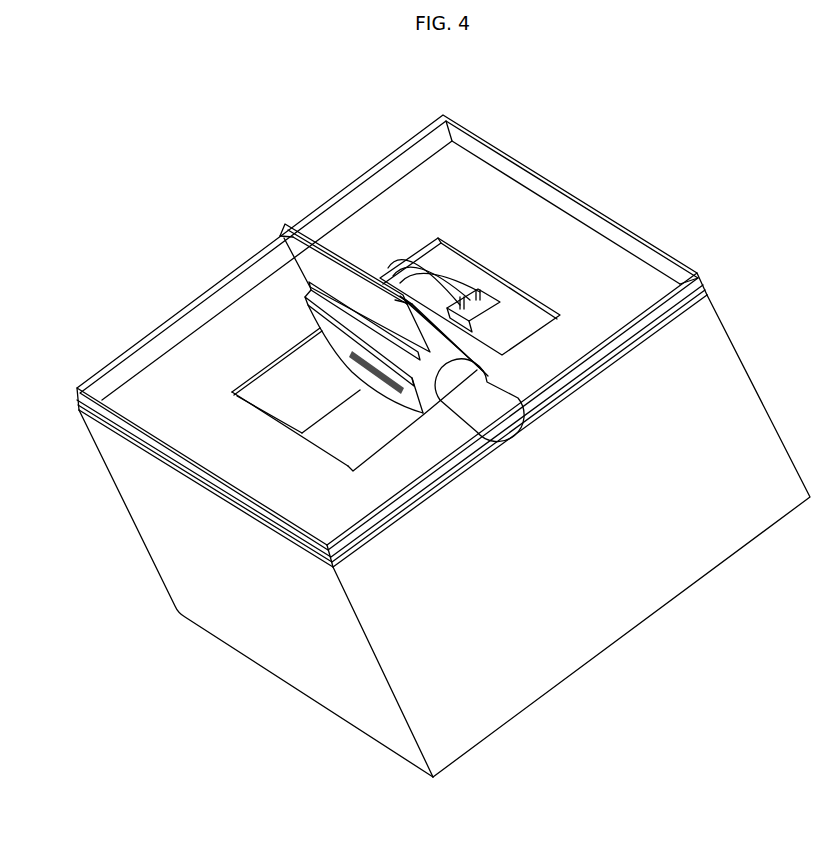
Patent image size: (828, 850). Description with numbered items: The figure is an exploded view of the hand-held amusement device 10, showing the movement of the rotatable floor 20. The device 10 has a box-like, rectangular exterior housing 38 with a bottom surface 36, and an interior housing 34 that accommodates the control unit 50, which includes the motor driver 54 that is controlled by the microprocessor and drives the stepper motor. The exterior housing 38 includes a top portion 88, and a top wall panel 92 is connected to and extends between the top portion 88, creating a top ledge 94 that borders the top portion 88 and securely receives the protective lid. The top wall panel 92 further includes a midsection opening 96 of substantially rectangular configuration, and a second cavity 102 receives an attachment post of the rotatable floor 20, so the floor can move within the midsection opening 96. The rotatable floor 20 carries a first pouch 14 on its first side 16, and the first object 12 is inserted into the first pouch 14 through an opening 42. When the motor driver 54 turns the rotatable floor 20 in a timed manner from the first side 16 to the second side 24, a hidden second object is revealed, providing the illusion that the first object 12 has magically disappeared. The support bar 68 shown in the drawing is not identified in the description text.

The device 10 is at (563, 177).
The first object 12 is at (352, 353).
The first pouch 14 is at (385, 407).
The first side 16 is at (318, 272).
The rotatable floor 20 is at (357, 250).
The second side 24 is at (357, 273).
The interior housing 34 is at (295, 390).
The bottom surface 36 is at (555, 690).
The exterior housing 38 is at (227, 598).
The opening 42 is at (340, 315).
The control unit 50 is at (503, 297).
The motor driver 54 is at (510, 318).
The support bar 68 is at (417, 323).
The top portion 88 is at (163, 460).
The top wall panel 92 is at (610, 282).
The top ledge 94 is at (118, 428).
The midsection opening 96 is at (272, 417).
The second cavity 102 is at (480, 390).